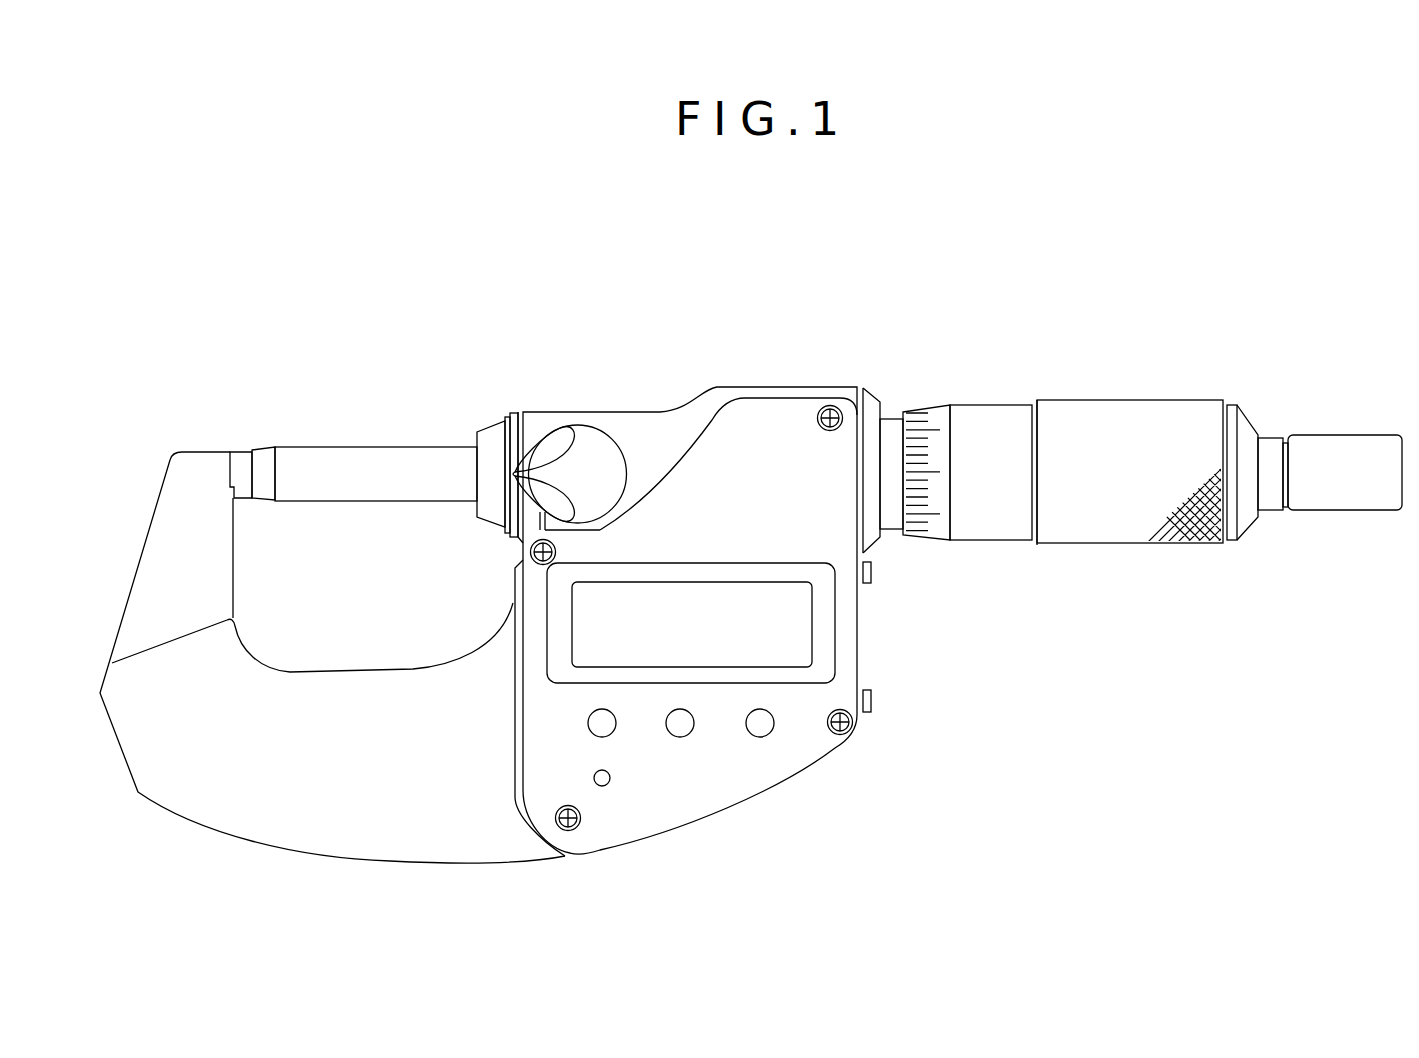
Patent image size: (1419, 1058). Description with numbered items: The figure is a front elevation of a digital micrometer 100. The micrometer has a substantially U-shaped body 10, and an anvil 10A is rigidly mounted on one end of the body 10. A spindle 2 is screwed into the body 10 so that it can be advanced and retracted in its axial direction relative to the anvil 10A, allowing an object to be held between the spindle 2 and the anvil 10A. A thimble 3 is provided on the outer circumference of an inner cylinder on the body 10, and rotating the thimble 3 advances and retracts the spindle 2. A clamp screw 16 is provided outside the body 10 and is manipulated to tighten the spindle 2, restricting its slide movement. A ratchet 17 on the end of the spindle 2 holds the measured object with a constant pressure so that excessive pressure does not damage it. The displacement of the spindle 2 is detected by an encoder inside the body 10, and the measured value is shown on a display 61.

The digital micrometer 100 is at (945, 303).
The body 10 is at (728, 386).
The anvil 10A is at (242, 450).
The spindle 2 is at (367, 446).
The thimble 3 is at (1000, 404).
The clamp screw 16 is at (570, 423).
The ratchet 17 is at (1327, 443).
The display 61 is at (800, 642).